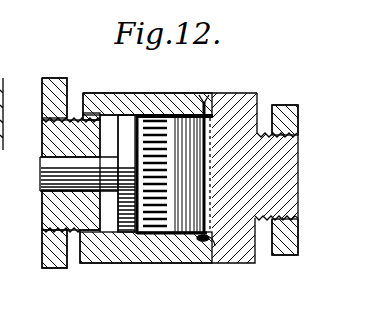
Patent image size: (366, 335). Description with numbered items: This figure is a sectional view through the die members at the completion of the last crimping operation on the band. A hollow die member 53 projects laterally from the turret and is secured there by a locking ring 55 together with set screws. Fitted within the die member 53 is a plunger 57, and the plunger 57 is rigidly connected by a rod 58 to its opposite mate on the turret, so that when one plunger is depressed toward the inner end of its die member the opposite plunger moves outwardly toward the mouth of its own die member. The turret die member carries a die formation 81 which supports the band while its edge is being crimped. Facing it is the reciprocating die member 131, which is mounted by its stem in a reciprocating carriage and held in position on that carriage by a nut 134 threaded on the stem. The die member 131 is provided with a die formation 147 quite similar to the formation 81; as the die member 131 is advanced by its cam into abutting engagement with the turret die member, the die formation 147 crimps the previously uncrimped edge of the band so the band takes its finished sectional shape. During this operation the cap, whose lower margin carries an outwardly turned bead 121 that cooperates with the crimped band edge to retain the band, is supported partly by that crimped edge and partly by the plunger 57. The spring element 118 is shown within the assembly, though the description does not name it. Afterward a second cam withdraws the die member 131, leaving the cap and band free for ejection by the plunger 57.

The locking ring 55 is at (57, 78).
The die member 53 is at (110, 105).
The die formation 147 is at (233, 98).
The die member 131 is at (229, 238).
The nut 134 is at (290, 112).
The rod 58 is at (40, 186).
The plunger 57 is at (124, 235).
The die formation 81 is at (191, 96).
The spring 118 is at (158, 235).
The bead 121 is at (215, 243).